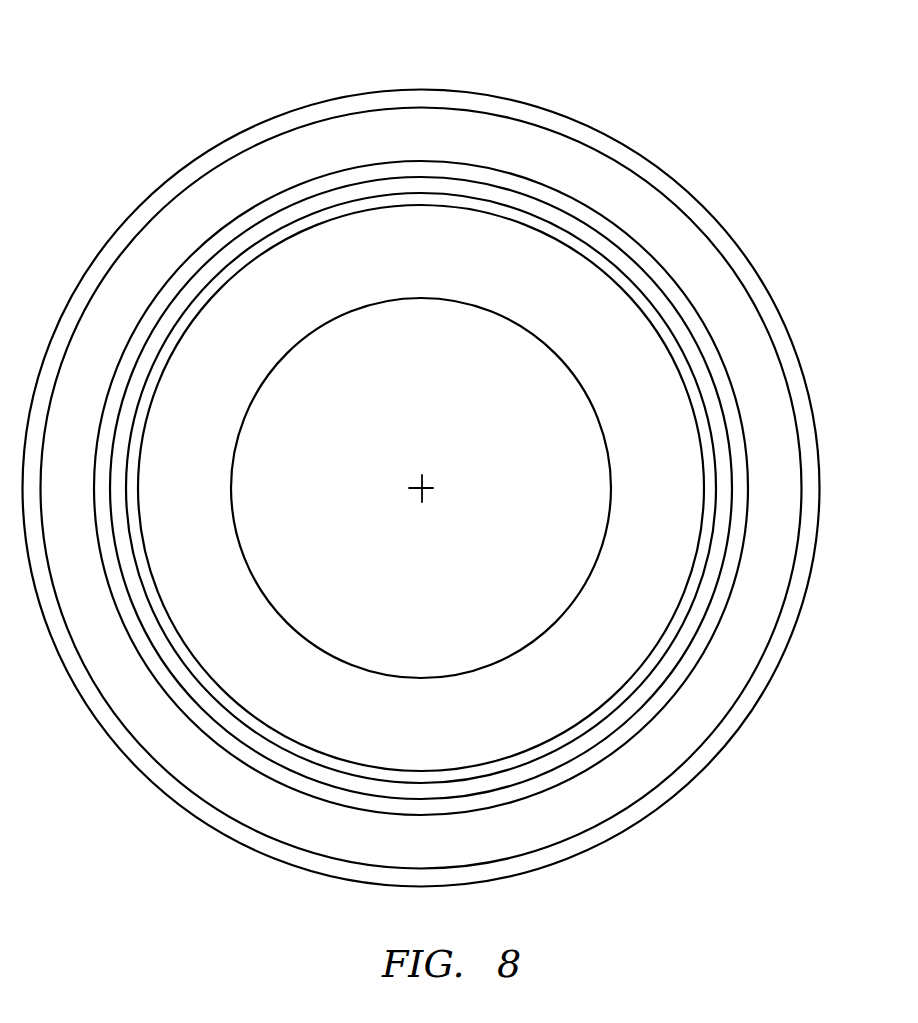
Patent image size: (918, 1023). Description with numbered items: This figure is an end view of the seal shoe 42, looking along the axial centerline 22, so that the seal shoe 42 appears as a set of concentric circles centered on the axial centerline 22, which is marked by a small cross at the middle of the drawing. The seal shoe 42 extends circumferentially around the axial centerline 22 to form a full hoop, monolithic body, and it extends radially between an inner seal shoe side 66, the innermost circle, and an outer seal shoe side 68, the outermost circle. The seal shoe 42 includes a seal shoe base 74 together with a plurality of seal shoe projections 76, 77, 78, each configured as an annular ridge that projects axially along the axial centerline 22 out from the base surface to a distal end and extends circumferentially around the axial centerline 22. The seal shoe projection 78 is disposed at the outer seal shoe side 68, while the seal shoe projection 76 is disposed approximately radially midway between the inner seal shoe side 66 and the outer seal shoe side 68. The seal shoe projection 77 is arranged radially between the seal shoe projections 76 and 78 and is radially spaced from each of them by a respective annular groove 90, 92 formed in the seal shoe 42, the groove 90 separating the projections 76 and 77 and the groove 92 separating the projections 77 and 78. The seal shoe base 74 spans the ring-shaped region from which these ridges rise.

The seal shoe 42 is at (744, 128).
The outer seal shoe side 68 is at (495, 94).
The seal shoe projection 78 is at (712, 211).
The groove 92 is at (605, 191).
The seal shoe projection 77 is at (699, 307).
The groove 90 is at (535, 206).
The seal shoe projection 76 is at (700, 383).
The seal shoe base 74 is at (421, 488).
The inner seal shoe side 66 is at (437, 299).
The axial centerline 22 is at (427, 491).